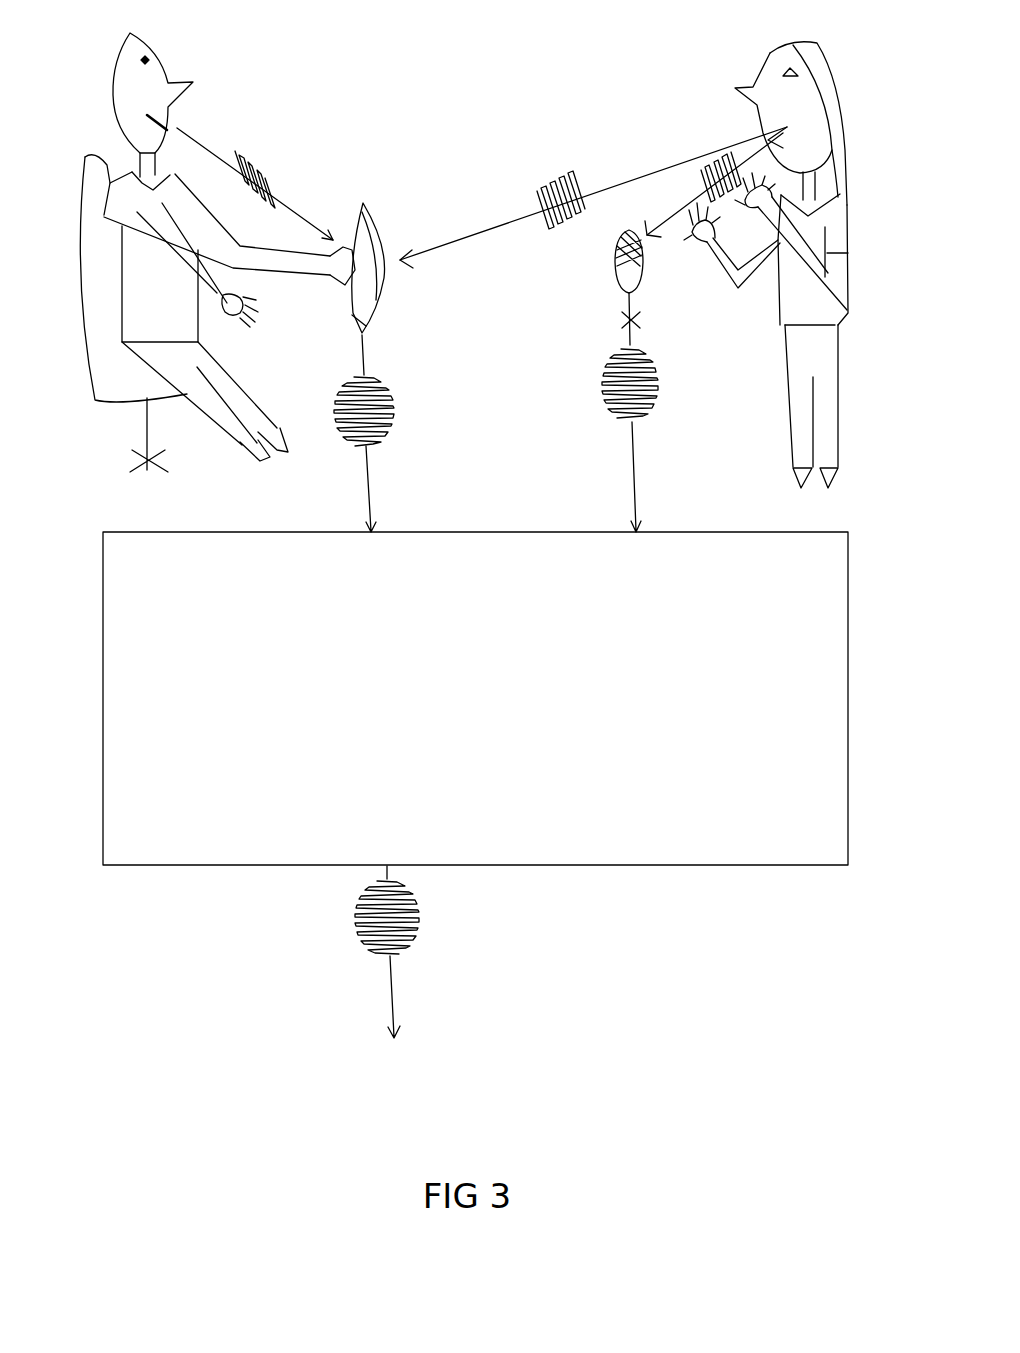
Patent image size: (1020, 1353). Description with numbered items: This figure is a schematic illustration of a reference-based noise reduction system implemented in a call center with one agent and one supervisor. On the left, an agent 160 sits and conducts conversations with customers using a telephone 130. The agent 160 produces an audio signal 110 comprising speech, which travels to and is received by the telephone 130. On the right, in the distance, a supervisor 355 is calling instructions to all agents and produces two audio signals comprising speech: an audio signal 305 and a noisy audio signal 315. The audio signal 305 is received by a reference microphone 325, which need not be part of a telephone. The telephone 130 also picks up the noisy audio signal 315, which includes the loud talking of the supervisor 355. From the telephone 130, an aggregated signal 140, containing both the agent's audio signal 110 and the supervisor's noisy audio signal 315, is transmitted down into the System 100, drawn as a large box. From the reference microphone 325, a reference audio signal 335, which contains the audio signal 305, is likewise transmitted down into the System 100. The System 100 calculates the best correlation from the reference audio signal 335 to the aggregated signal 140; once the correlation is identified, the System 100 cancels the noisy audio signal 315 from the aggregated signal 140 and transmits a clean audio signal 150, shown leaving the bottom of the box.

The System 100 is at (817, 530).
The audio signal 110 is at (268, 155).
The telephone 130 is at (380, 313).
The aggregated signal 140 is at (397, 410).
The clean audio signal 150 is at (362, 913).
The agent 160 is at (112, 87).
The audio signal 305 is at (713, 167).
The noisy audio signal 315 is at (563, 172).
The reference microphone 325 is at (628, 294).
The reference audio signal 335 is at (600, 380).
The supervisor 355 is at (845, 115).